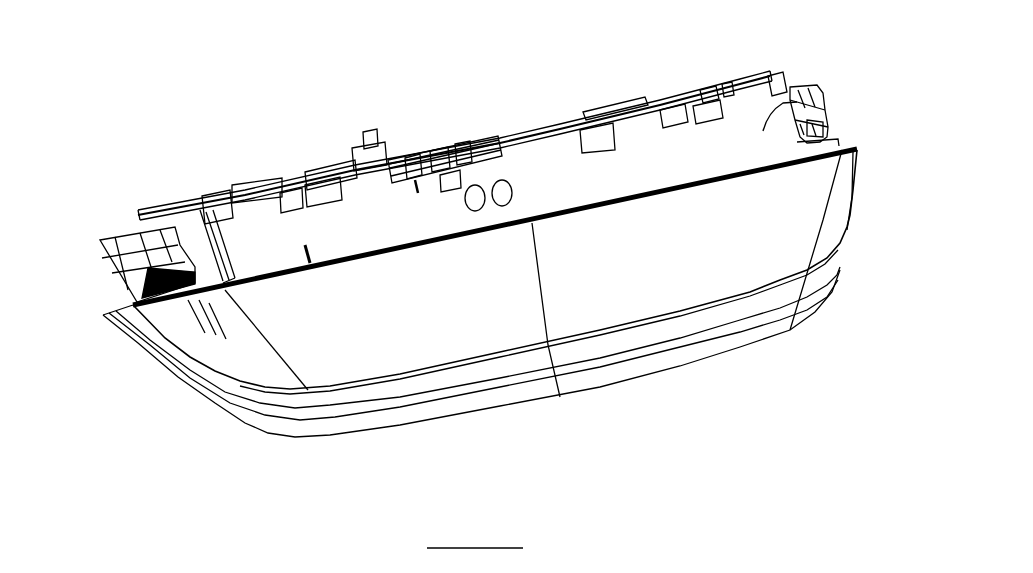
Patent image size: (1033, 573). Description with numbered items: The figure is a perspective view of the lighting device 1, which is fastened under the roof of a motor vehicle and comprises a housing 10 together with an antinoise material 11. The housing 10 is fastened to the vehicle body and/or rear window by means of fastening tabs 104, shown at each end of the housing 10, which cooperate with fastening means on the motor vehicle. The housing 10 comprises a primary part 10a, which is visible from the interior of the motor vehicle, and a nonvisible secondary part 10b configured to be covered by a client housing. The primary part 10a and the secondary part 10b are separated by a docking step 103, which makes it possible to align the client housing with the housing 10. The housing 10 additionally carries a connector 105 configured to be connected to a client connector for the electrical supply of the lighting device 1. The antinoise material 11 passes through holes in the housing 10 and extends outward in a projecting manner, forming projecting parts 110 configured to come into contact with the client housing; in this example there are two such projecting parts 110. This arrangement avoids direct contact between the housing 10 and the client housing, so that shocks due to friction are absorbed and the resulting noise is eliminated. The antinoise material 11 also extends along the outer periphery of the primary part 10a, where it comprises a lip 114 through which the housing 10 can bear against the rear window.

The lighting device 1 is at (220, 111).
The housing 10 is at (916, 43).
The primary part 10a is at (728, 233).
The secondary part 10b is at (820, 112).
The antinoise material 11 is at (708, 32).
The docking step 103 is at (392, 238).
The fastening tabs 104 is at (133, 257).
The connector 105 is at (362, 130).
The projecting part 110 is at (325, 185).
The lip 114 is at (584, 350).